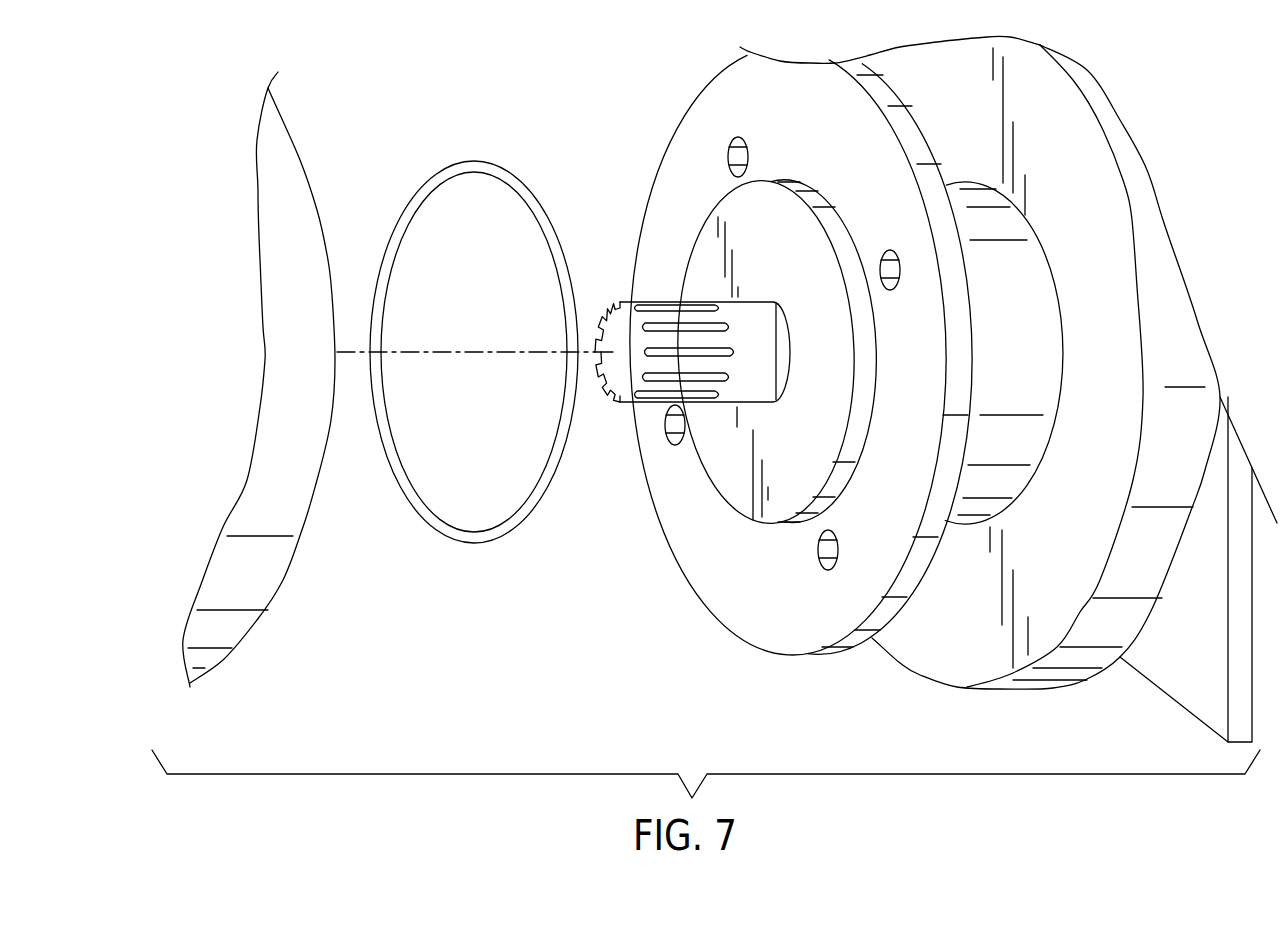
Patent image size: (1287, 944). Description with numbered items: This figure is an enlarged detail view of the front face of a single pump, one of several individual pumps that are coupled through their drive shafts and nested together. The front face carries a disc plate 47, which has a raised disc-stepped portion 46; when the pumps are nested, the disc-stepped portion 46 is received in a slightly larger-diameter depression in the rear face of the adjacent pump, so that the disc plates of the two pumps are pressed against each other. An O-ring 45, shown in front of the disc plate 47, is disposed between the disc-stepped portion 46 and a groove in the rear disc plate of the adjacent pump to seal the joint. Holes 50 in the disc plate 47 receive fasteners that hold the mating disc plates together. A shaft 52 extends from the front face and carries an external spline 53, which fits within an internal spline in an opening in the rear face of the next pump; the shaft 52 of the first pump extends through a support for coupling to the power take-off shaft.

The O-ring 45 is at (533, 190).
The disc-stepped portion 46 is at (867, 395).
The disc plate 47 is at (782, 657).
The holes 50 is at (837, 550).
The shaft 52 is at (681, 361).
The external spline 53 is at (655, 315).